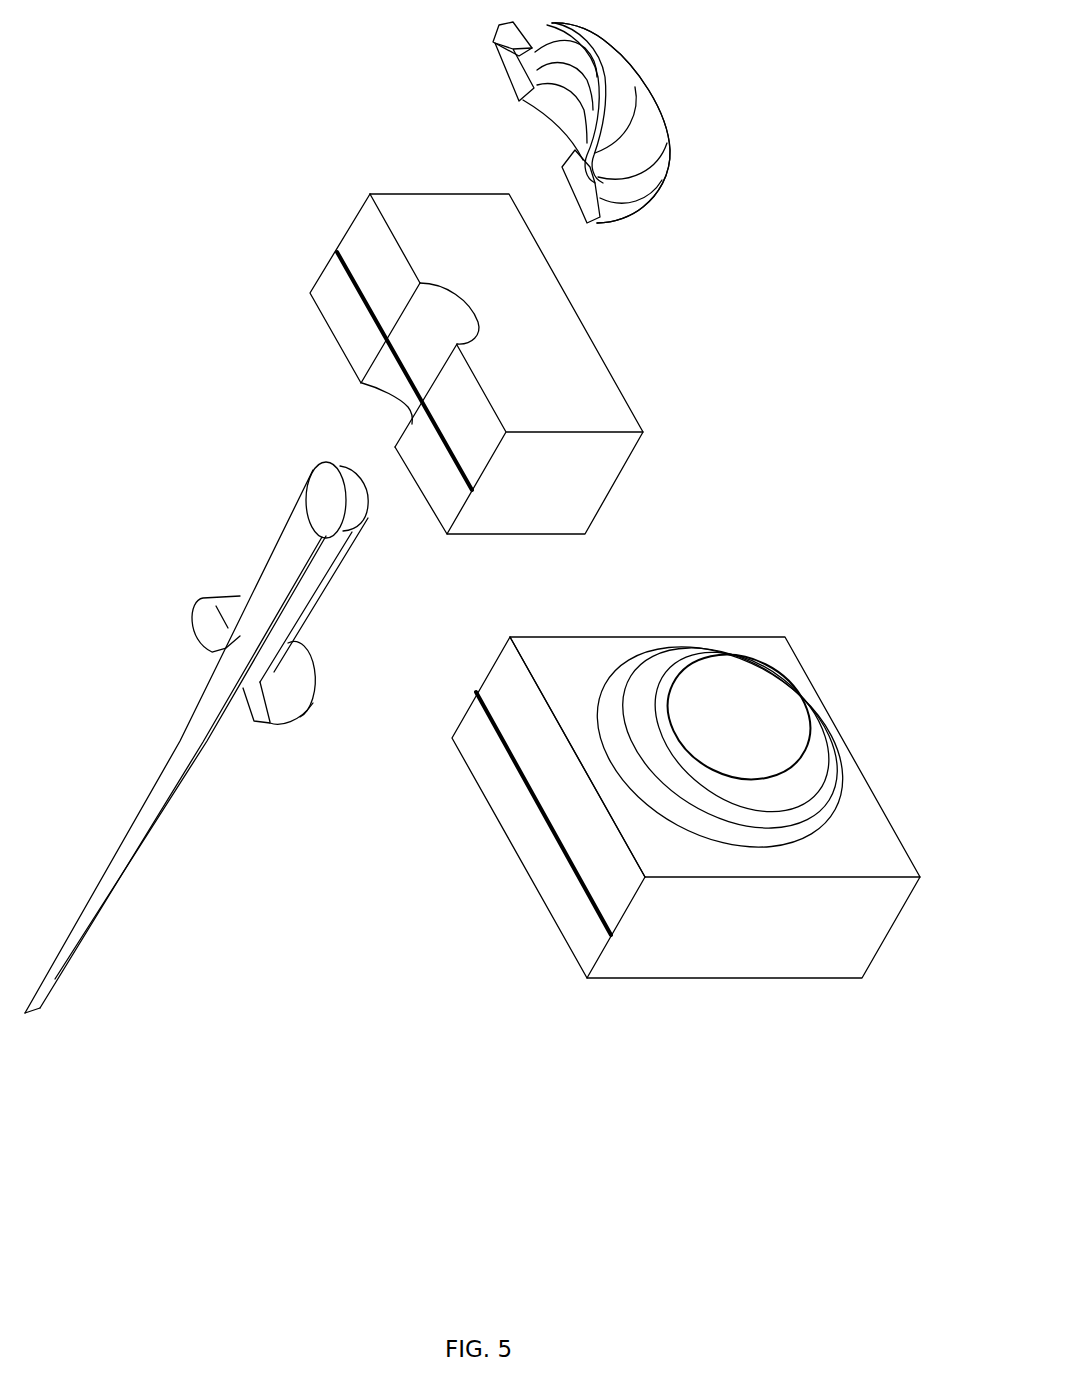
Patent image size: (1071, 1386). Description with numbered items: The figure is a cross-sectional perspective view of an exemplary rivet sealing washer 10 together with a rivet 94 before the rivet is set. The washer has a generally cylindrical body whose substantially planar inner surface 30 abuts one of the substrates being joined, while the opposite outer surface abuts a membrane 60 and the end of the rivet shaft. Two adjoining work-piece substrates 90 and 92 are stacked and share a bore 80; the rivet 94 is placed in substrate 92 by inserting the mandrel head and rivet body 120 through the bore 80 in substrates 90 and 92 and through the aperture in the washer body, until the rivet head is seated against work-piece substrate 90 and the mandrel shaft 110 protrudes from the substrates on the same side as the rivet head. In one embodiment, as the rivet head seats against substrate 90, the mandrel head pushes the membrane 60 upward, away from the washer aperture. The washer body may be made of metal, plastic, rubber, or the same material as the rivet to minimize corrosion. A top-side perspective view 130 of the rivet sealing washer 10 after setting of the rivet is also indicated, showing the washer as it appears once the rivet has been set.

The rivet sealing washer 10 is at (691, 95).
The inner surface 30 is at (520, 93).
The membrane 60 is at (612, 50).
The bore 80 is at (442, 333).
The work-piece substrate 90 is at (344, 292).
The substrate 92 is at (384, 244).
The rivet 94 is at (640, 335).
The mandrel shaft 110 is at (127, 847).
The rivet body 120 is at (253, 592).
The top-side perspective view 130 is at (875, 691).